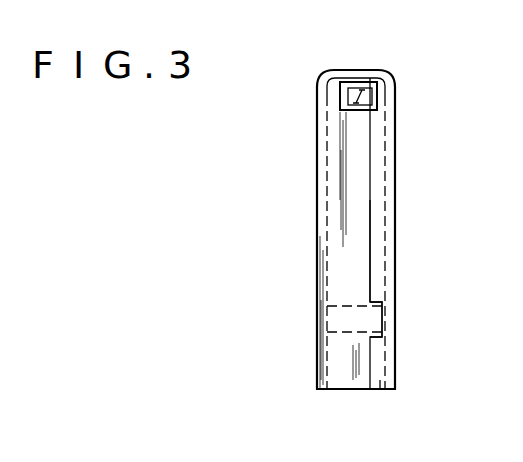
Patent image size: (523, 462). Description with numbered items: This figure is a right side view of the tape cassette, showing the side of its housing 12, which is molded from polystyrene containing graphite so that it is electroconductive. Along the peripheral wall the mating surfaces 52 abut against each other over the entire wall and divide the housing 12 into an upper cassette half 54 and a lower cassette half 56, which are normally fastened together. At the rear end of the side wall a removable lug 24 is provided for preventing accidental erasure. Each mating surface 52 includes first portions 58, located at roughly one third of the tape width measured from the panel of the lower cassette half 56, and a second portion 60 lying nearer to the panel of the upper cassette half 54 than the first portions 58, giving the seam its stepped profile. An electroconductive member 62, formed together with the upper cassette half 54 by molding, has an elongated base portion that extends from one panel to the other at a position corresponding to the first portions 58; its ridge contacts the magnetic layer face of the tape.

The housing 12 is at (317, 205).
The removable lug 24 is at (372, 94).
The mating surfaces 52 is at (372, 166).
The upper cassette half 54 is at (348, 380).
The lower cassette half 56 is at (380, 380).
The first portions 58 is at (382, 321).
The second portion 60 is at (370, 242).
The electroconductive members 62 is at (350, 306).